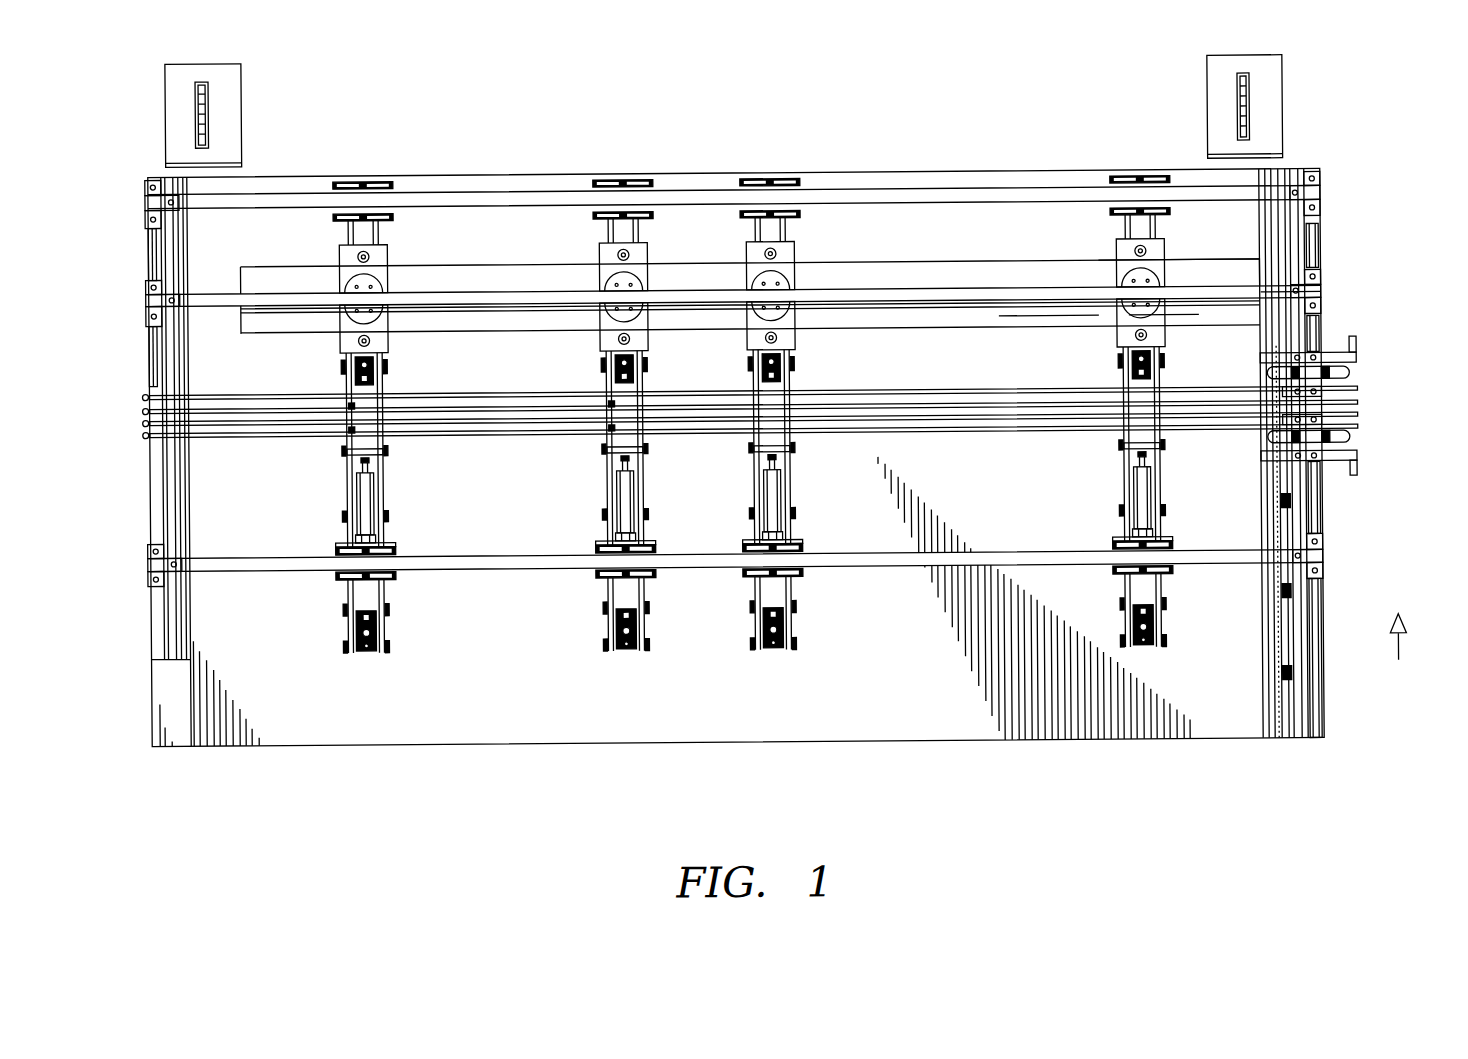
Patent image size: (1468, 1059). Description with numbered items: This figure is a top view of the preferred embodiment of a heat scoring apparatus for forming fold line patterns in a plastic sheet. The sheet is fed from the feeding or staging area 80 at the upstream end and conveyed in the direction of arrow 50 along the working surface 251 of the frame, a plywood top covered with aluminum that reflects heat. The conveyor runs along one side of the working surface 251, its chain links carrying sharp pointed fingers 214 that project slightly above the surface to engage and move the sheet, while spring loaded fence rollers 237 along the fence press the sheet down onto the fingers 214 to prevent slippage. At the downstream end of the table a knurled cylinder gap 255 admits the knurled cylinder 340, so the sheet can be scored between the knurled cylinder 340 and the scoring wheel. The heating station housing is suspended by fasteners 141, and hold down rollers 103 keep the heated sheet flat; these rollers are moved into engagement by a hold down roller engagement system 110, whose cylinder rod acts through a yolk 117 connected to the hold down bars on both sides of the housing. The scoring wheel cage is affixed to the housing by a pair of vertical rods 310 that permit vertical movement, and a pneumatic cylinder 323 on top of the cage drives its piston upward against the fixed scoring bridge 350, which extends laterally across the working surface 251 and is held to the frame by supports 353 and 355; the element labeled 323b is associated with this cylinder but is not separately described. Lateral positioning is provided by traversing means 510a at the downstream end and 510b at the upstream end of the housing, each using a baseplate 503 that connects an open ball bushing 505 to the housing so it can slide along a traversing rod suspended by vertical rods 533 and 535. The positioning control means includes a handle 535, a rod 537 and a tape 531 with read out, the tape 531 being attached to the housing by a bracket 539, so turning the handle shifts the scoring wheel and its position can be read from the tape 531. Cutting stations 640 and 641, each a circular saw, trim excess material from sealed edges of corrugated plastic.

The feeding or staging area 80 is at (512, 761).
The arrow 50 is at (1401, 661).
The working surface 251 is at (903, 721).
The traversing means 510a is at (488, 570).
The traversing means 510b is at (488, 200).
The support 355 is at (150, 296).
The support 353 is at (1322, 294).
The knurled cylinder 340 is at (853, 270).
The knurled cylinder gap 255 is at (1207, 272).
The scoring bridge 350 is at (468, 301).
The vertical rod 535 is at (150, 197).
The vertical rod 533 is at (1320, 194).
The tape 531 is at (1360, 396).
The rod 537 is at (1360, 416).
The bracket 539 is at (330, 426).
The sharp pointed fingers 214 is at (1278, 572).
The fence roller 237 is at (1282, 503).
The open ball bushing 505 is at (397, 212).
The baseplate 503 is at (393, 536).
The pneumatic cylinder 323 is at (599, 262).
The mounting block clamp 323b is at (350, 283).
The vertical rods 310 is at (372, 252).
The fasteners 141 is at (383, 365).
The hold down rollers 103 is at (345, 360).
The yolk 117 is at (388, 445).
The hold down roller engagement system 110 is at (368, 489).
The cutting station 641 is at (244, 104).
The cutting station 640 is at (1206, 101).